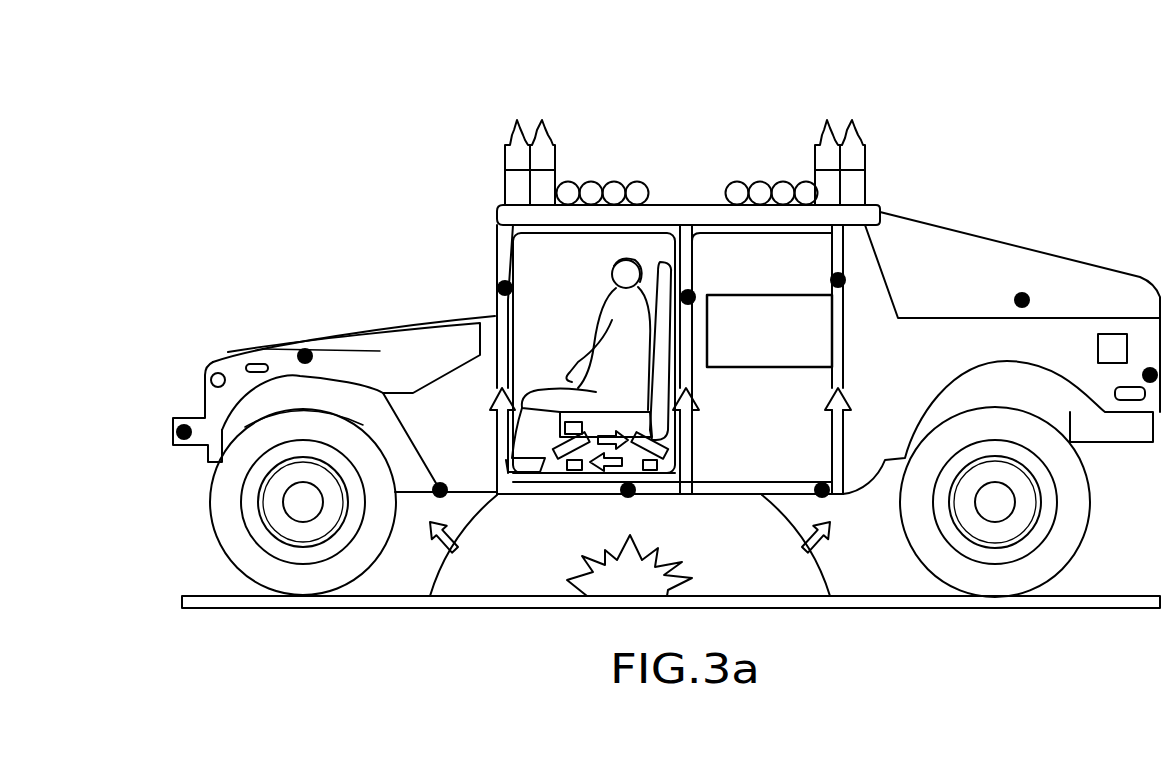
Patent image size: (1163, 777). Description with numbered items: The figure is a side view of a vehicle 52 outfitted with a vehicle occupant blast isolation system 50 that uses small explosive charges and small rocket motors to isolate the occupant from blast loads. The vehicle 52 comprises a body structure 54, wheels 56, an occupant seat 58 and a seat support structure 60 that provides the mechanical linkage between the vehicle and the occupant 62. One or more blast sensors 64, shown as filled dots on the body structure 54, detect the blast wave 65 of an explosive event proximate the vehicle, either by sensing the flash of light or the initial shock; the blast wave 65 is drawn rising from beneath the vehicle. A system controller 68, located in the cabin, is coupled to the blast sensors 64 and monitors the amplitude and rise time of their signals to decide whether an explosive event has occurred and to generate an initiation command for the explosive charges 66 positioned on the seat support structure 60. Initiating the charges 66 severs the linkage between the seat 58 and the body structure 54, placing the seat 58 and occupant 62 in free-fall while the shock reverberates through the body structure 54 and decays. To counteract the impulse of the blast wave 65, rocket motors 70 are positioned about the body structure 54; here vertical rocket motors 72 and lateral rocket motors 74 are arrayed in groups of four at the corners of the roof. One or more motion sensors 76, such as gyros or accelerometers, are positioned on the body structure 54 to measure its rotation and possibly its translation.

The vehicle occupant blast isolation system 50 is at (286, 126).
The vehicle 52 is at (984, 205).
The body structure 54 is at (405, 315).
The wheels 56 is at (172, 525).
The occupant seat 58 is at (668, 228).
The seat support structure 60 is at (558, 482).
The occupant 62 is at (592, 320).
The blast sensors 64 is at (181, 424).
The blast wave 65 is at (812, 553).
The explosive charges 66 is at (565, 424).
The system controller 68 is at (752, 295).
The rocket motors 70 is at (617, 140).
The vertical rocket motors 72 is at (504, 190).
The lateral rocket motors 74 is at (597, 181).
The motion sensors 76 is at (300, 349).